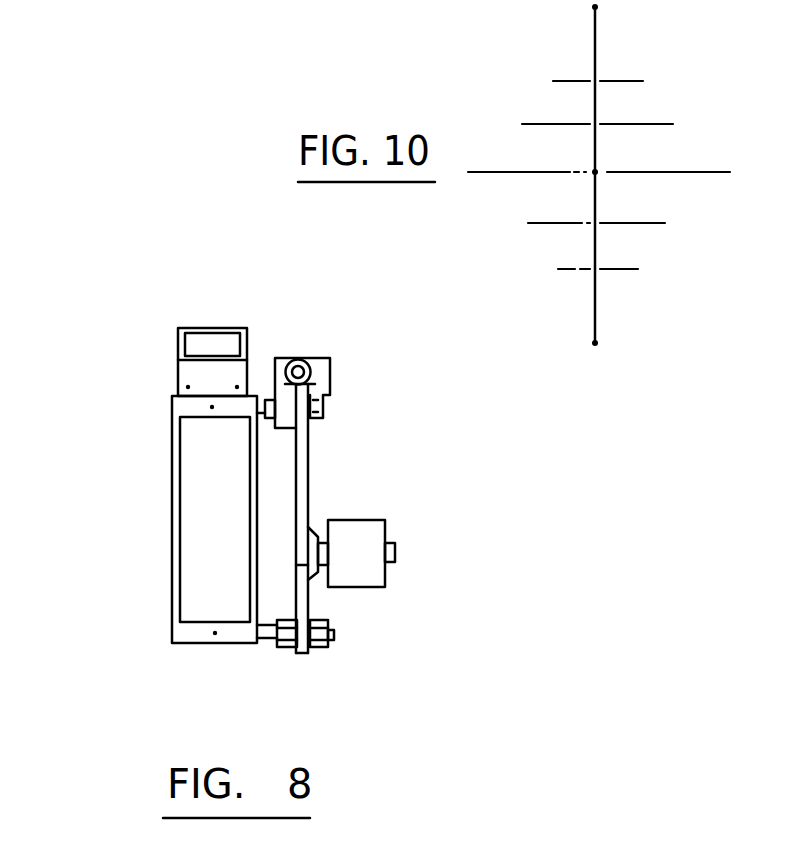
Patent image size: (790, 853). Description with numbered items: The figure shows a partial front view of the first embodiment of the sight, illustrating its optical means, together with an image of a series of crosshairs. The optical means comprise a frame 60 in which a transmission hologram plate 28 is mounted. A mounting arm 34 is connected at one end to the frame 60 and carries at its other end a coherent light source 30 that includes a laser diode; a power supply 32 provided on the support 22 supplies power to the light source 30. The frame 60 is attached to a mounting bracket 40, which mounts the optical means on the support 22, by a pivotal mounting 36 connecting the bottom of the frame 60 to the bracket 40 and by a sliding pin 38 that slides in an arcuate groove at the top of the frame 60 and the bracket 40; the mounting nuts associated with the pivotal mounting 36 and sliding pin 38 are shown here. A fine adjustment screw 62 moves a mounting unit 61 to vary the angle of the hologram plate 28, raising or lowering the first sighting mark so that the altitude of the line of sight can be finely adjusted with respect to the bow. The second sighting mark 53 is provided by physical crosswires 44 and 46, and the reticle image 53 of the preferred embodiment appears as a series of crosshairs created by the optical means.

In FIG. 8, the support 22 is at (312, 532).
In FIG. 8, the transmission hologram plate 28 is at (202, 505).
In FIG. 8, the coherent light source 30 is at (210, 340).
In FIG. 8, the power supply 32 is at (373, 540).
In FIG. 8, the mounting arm 34 is at (192, 368).
In FIG. 8, the pivotal mounting 36 is at (270, 633).
In FIG. 8, the sliding pin 38 is at (262, 402).
In FIG. 8, the mounting bracket 40 is at (312, 605).
In FIG. 10, the crosswire 44 is at (595, 47).
In FIG. 10, the crosswire 46 is at (643, 81).
In FIG. 10, the second sighting mark 53 is at (669, 201).
In FIG. 8, the frame 60 is at (180, 413).
In FIG. 8, the mounting unit 61 is at (318, 383).
In FIG. 8, the fine adjustment screw 62 is at (298, 360).